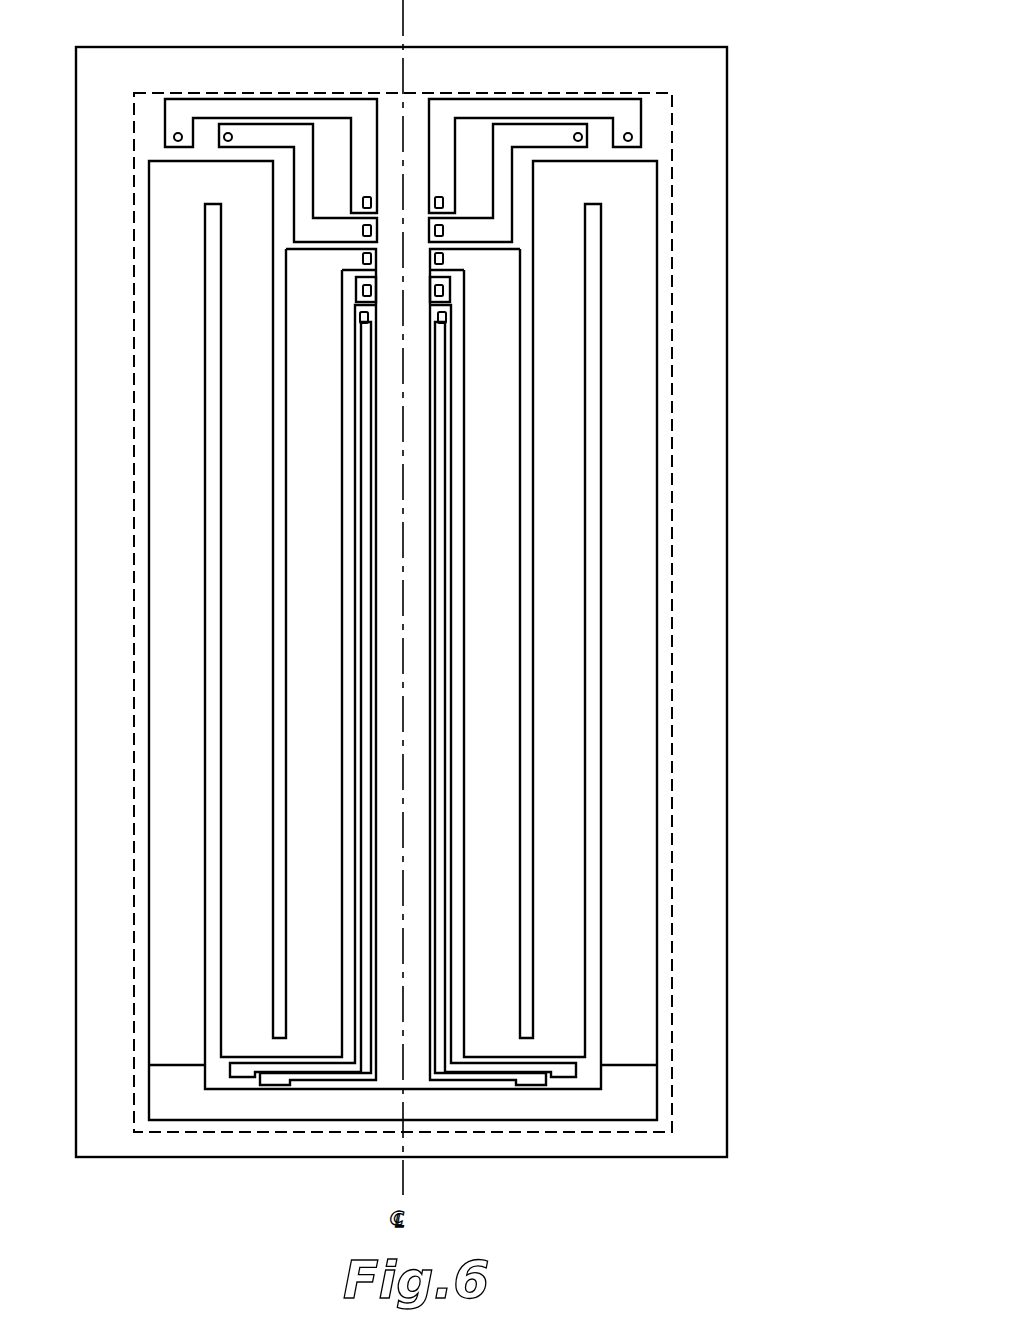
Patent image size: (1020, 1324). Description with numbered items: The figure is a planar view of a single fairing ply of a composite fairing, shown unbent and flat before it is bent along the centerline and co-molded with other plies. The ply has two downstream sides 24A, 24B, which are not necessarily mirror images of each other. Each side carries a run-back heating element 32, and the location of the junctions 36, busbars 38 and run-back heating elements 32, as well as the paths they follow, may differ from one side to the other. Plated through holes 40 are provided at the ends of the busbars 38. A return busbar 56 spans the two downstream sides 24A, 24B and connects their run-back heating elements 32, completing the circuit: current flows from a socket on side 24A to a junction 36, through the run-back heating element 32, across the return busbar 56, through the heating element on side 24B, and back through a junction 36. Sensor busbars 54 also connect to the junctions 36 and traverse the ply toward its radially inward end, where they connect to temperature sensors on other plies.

The downstream side 24A is at (531, 1132).
The downstream side 24B is at (256, 1132).
The run-back heating element 32 is at (633, 437).
The junctions 36 is at (437, 318).
The busbars 38 is at (510, 126).
The plated through holes 40 is at (627, 131).
The sensor busbars 54 is at (465, 1060).
The return busbar 56 is at (633, 1090).